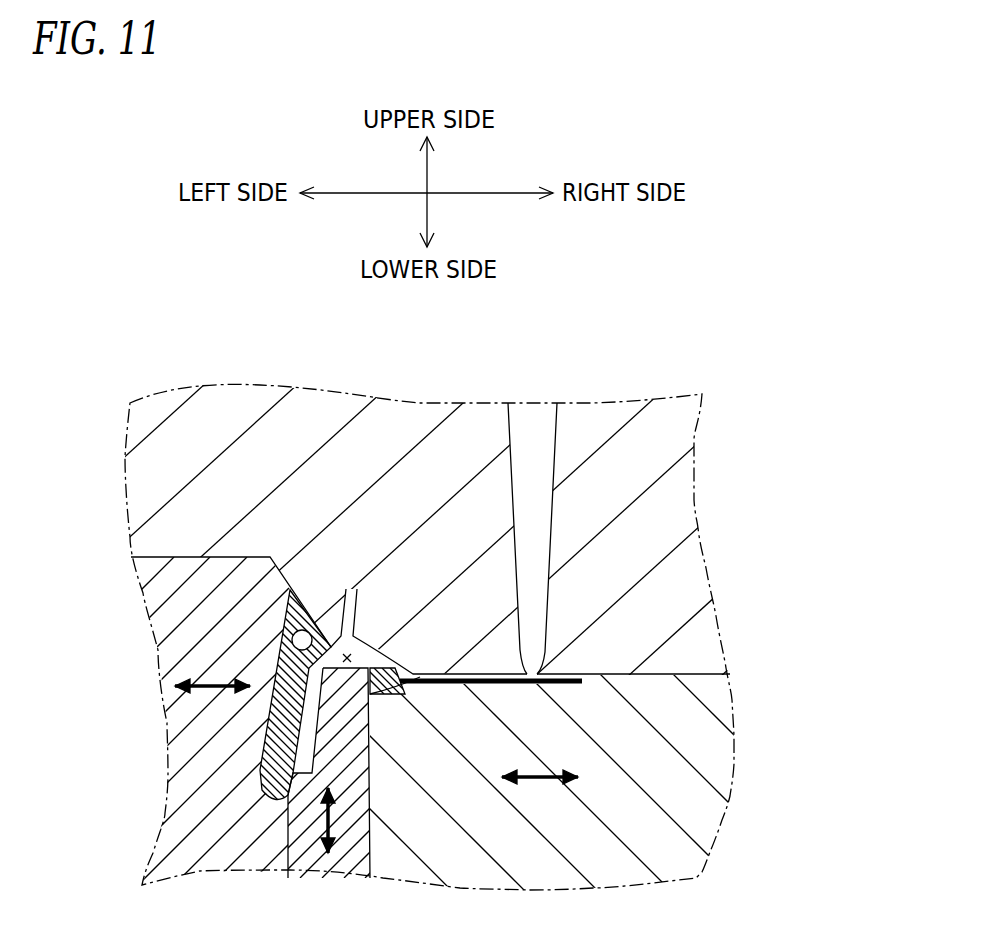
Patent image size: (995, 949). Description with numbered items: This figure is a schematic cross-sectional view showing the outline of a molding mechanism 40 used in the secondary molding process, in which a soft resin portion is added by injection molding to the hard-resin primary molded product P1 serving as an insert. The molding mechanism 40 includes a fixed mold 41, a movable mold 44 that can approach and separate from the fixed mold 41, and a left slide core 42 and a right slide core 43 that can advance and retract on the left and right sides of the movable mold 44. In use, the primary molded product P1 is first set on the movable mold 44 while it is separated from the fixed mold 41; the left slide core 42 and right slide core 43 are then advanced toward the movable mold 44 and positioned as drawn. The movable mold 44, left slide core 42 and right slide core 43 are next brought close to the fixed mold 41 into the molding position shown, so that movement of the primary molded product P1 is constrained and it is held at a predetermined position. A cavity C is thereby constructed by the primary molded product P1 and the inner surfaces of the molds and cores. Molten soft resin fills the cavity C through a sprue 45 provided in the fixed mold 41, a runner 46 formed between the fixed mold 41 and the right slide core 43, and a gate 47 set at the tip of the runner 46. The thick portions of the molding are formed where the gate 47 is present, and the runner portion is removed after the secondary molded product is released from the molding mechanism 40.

The molding mechanism 40 is at (261, 363).
The fixed mold 41 is at (428, 408).
The left slide core 42 is at (178, 718).
The right slide core 43 is at (617, 863).
The movable mold 44 is at (308, 867).
The sprue 45 is at (537, 517).
The runner 46 is at (488, 684).
The gate 47 is at (402, 684).
The cavity C is at (343, 656).
The primary molded product P1 is at (282, 747).